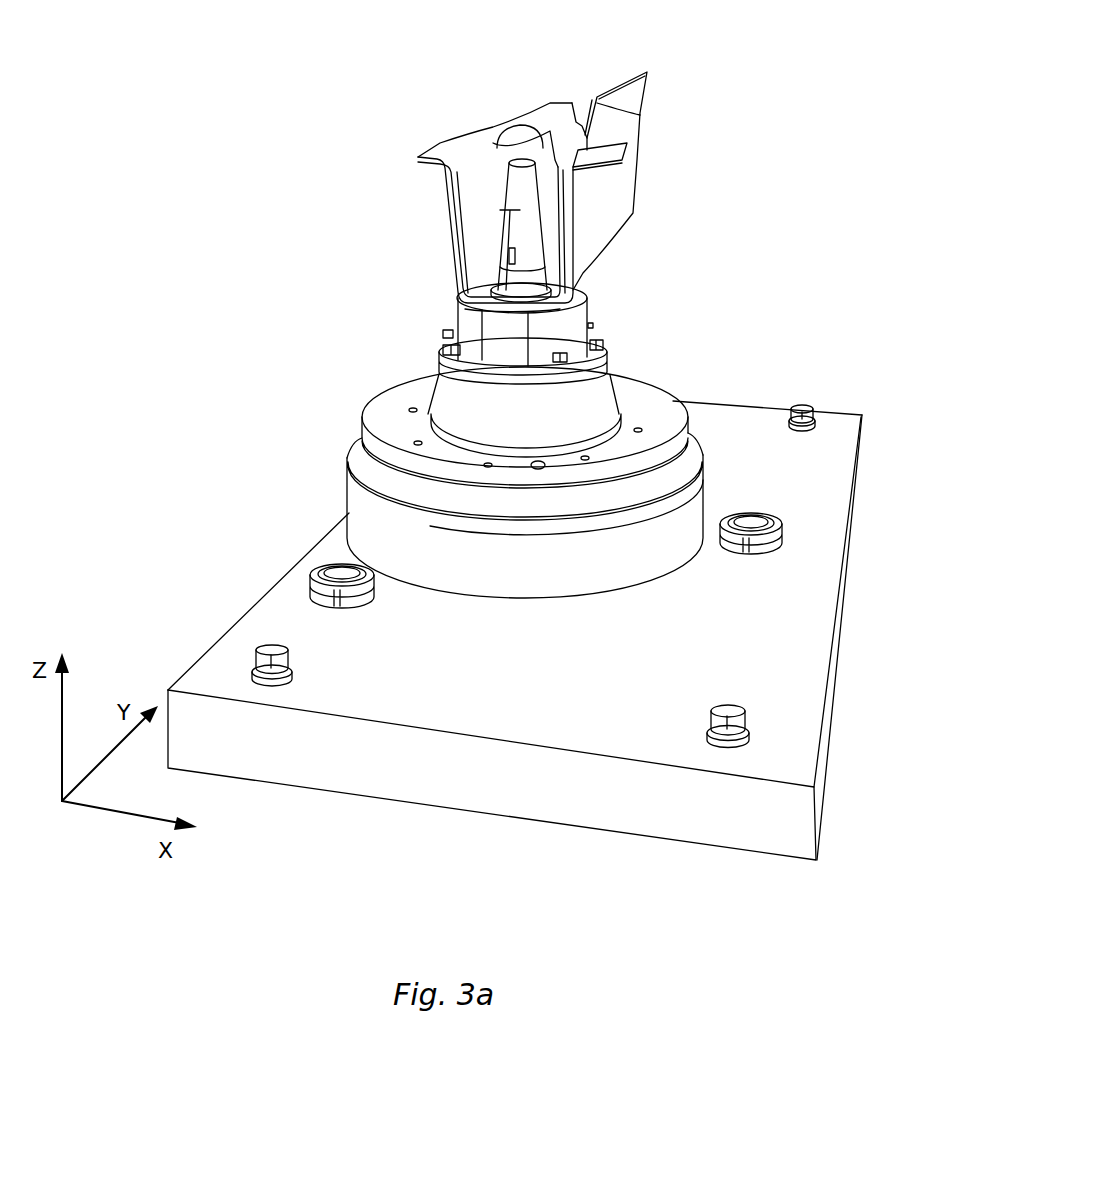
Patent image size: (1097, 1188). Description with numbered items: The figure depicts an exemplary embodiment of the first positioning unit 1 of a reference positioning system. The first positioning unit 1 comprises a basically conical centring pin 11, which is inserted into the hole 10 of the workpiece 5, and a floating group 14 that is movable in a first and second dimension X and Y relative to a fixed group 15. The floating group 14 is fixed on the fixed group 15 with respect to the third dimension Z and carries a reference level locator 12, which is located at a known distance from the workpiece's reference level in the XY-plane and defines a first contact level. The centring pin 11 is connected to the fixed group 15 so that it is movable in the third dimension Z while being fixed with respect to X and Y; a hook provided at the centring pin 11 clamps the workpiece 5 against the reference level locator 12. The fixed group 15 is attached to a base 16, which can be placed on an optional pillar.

The first positioning unit 1 is at (366, 266).
The workpiece 5 is at (635, 103).
The hole 10 is at (545, 288).
The centring pin 11 is at (523, 200).
The reference level locator 12 is at (565, 300).
The floating group 14 is at (597, 395).
The fixed group 15 is at (362, 527).
The base 16 is at (300, 622).